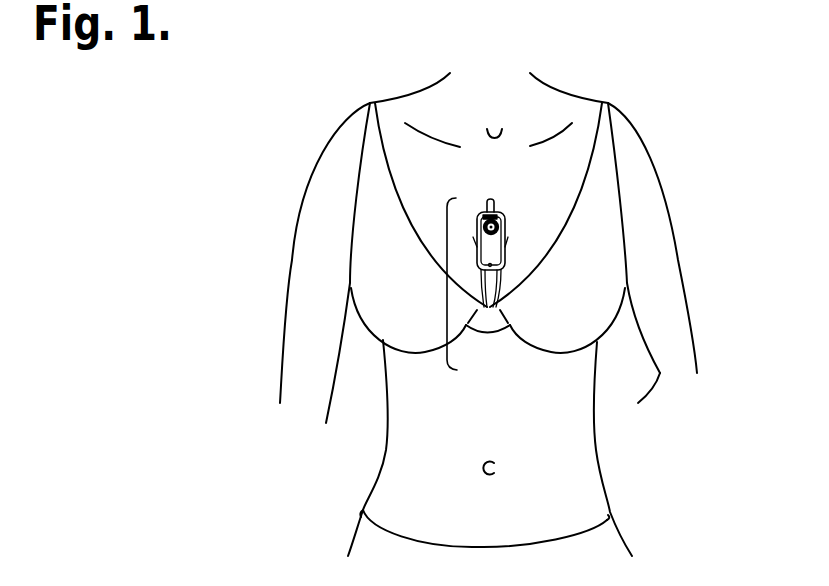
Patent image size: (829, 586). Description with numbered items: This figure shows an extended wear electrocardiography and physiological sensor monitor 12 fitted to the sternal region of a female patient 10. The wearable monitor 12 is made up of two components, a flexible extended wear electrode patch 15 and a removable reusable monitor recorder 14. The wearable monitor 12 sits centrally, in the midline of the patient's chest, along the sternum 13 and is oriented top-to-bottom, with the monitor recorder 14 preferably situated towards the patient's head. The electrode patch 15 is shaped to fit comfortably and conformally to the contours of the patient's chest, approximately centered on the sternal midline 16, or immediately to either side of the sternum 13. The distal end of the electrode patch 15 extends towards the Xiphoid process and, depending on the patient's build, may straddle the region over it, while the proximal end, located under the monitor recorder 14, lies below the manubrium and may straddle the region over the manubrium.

The female patient 10 is at (652, 156).
The extended wear electrocardiography and physiological sensor monitor 12 is at (523, 225).
The sternum 13 is at (447, 291).
The monitor recorder 14 is at (507, 223).
The electrode patch 15 is at (502, 288).
The sternal midline 16 is at (484, 333).